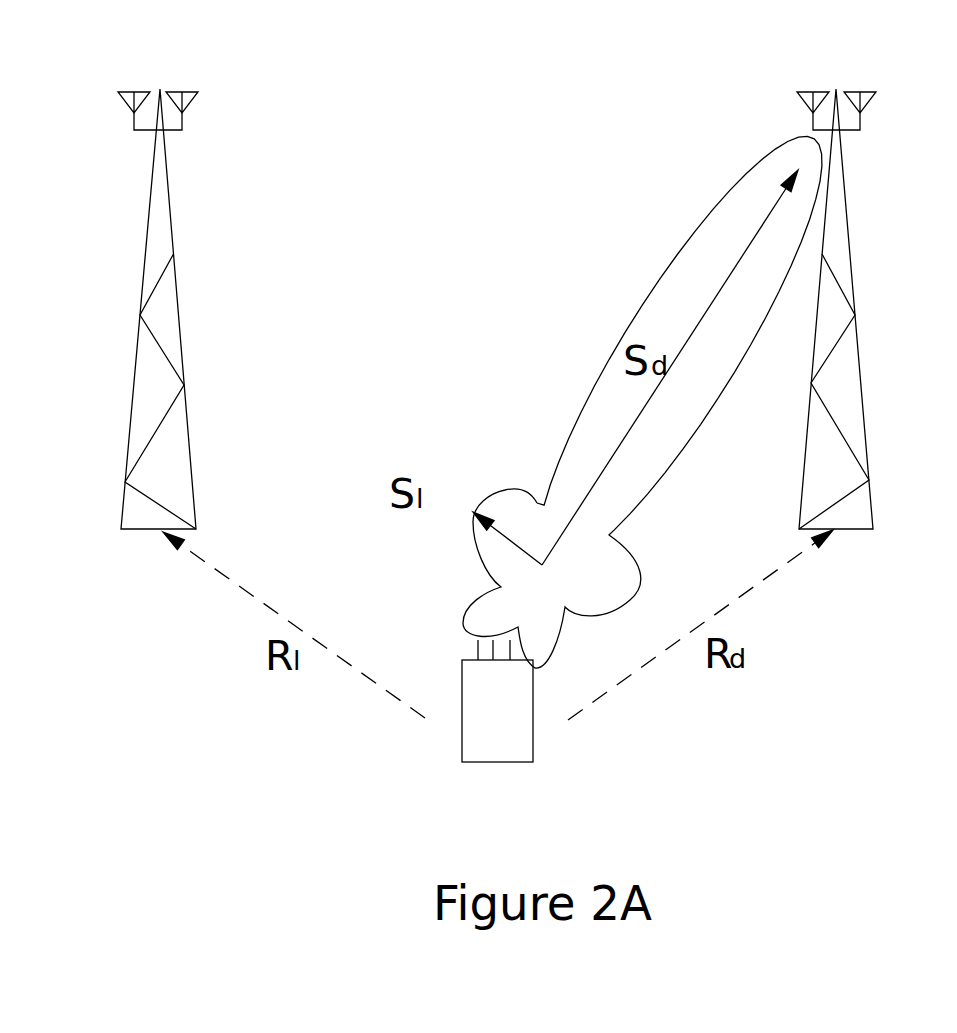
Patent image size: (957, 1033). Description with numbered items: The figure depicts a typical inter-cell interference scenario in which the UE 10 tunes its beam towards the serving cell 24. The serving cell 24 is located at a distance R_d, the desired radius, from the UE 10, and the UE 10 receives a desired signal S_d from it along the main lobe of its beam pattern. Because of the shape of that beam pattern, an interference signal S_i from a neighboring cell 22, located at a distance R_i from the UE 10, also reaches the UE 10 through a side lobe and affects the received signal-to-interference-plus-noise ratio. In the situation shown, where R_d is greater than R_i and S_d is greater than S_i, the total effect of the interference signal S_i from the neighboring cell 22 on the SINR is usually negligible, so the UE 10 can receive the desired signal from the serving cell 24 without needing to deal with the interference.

The neighboring cell 22 is at (132, 403).
The serving cell 24 is at (866, 434).
The UE 10 is at (533, 733).